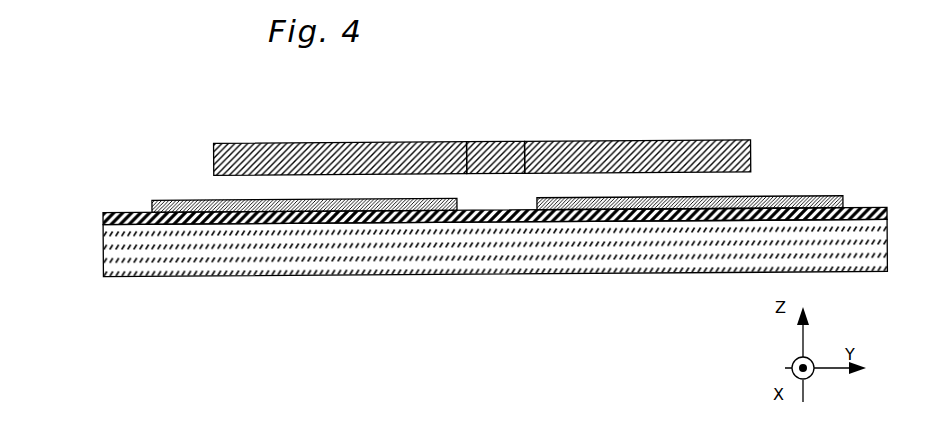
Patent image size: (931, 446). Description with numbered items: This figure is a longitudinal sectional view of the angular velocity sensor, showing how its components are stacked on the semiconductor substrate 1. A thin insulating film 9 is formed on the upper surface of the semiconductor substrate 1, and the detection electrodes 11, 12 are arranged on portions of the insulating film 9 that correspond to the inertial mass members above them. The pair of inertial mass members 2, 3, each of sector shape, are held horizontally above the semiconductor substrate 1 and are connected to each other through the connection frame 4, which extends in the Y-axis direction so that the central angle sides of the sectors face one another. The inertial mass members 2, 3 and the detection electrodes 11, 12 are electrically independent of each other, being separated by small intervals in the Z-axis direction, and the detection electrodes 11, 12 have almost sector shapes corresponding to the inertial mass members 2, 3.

The semiconductor substrate 1 is at (245, 276).
The insulating film 9 is at (120, 212).
The detection electrode 11 is at (172, 200).
The detection electrode 12 is at (793, 197).
The inertial mass member 2 is at (278, 142).
The inertial mass member 3 is at (648, 141).
The connection frame 4 is at (489, 141).